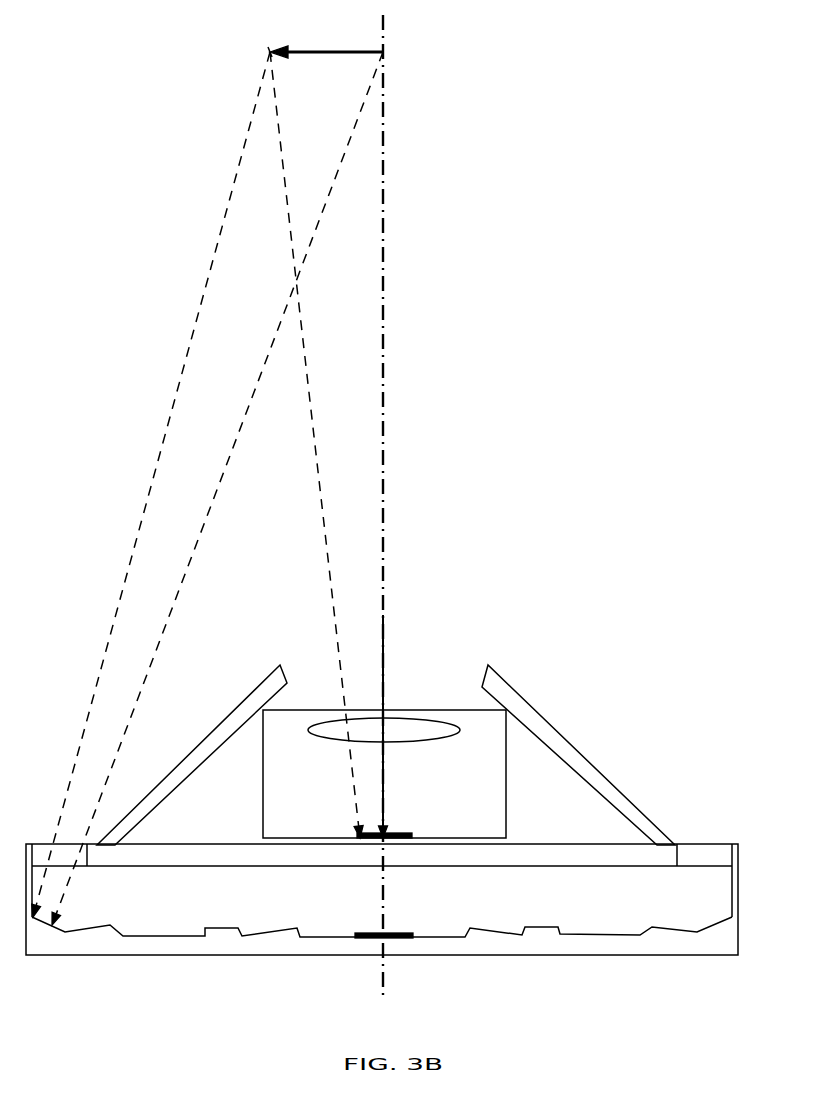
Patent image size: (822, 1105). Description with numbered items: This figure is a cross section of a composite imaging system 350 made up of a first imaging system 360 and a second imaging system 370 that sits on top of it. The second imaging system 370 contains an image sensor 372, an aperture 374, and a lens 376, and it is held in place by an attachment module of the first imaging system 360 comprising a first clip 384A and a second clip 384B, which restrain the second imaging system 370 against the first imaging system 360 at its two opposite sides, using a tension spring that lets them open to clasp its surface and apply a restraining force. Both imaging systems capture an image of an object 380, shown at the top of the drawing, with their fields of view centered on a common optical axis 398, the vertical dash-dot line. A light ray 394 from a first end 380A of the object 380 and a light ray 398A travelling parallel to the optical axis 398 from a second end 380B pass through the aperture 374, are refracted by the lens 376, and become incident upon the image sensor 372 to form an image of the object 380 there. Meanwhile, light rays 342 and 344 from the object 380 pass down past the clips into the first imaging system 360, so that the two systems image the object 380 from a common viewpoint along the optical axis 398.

The light ray 342 is at (165, 437).
The light ray 344 is at (228, 462).
The composite imaging system 350 is at (578, 333).
The first imaging system 360 is at (728, 822).
The second imaging system 370 is at (513, 788).
The image sensor 372 is at (410, 822).
The aperture 374 is at (400, 697).
The lens 376 is at (408, 745).
The object 380 is at (333, 50).
The first end of the object 380A is at (268, 50).
The second end of the object 380B is at (388, 50).
The first clip 384A is at (280, 663).
The second clip 384B is at (515, 688).
The light ray 394 is at (302, 348).
The optical axis 398 is at (383, 368).
The light ray 398A is at (383, 772).